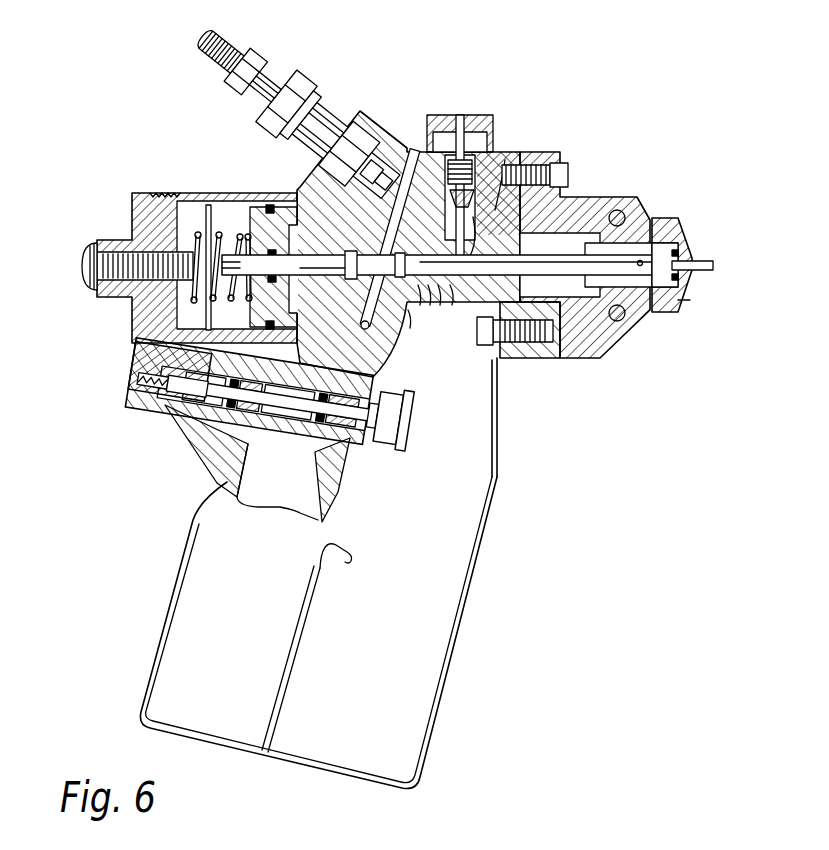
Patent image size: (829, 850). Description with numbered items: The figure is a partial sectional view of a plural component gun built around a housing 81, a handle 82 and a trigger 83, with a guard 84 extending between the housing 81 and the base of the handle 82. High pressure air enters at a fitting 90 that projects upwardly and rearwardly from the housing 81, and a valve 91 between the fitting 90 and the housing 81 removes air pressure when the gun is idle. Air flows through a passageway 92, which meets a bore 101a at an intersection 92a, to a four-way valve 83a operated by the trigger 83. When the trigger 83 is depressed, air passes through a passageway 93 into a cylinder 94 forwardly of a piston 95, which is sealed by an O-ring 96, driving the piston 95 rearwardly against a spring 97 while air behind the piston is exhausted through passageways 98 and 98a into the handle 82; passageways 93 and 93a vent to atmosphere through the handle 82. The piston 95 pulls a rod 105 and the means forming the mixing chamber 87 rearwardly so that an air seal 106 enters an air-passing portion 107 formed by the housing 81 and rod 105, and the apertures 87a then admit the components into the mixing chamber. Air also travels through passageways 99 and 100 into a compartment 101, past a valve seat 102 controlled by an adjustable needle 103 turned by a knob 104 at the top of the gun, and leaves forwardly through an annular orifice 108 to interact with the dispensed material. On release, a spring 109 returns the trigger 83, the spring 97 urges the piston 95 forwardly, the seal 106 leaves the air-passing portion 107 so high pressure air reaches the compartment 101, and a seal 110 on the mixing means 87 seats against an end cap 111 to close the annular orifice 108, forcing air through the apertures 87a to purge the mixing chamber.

The housing 81 is at (630, 340).
The handle 82 is at (150, 630).
The trigger 83 is at (395, 445).
The four-way valve 83a is at (185, 412).
The guard 84 is at (476, 600).
The means forming the mixing chamber 87 is at (700, 272).
The apertures 87a is at (640, 260).
The fitting 90 is at (197, 47).
The valve 91 is at (300, 78).
The passageway 92 is at (318, 162).
The intersection 92a is at (410, 328).
The passageway 93 is at (350, 372).
The passageway 93a is at (330, 487).
The cylinder 94 is at (208, 210).
The piston 95 is at (226, 210).
The O-ring 96 is at (270, 205).
The spring 97 is at (180, 205).
The passageway 98 is at (130, 362).
The passageway 98a is at (195, 455).
The passageway 99 is at (403, 130).
The passageway 100 is at (540, 165).
The compartment 101 is at (572, 197).
The bore 101a is at (420, 305).
The valve seat 102 is at (505, 160).
The adjustable needle 103 is at (473, 217).
The knob 104 is at (438, 115).
The rod 105 is at (440, 305).
The air seal 106 is at (452, 305).
The air-passing portion 107 is at (430, 305).
The annular orifice 108 is at (705, 262).
The spring 109 is at (128, 387).
The seal 110 is at (690, 255).
The end cap 111 is at (678, 305).